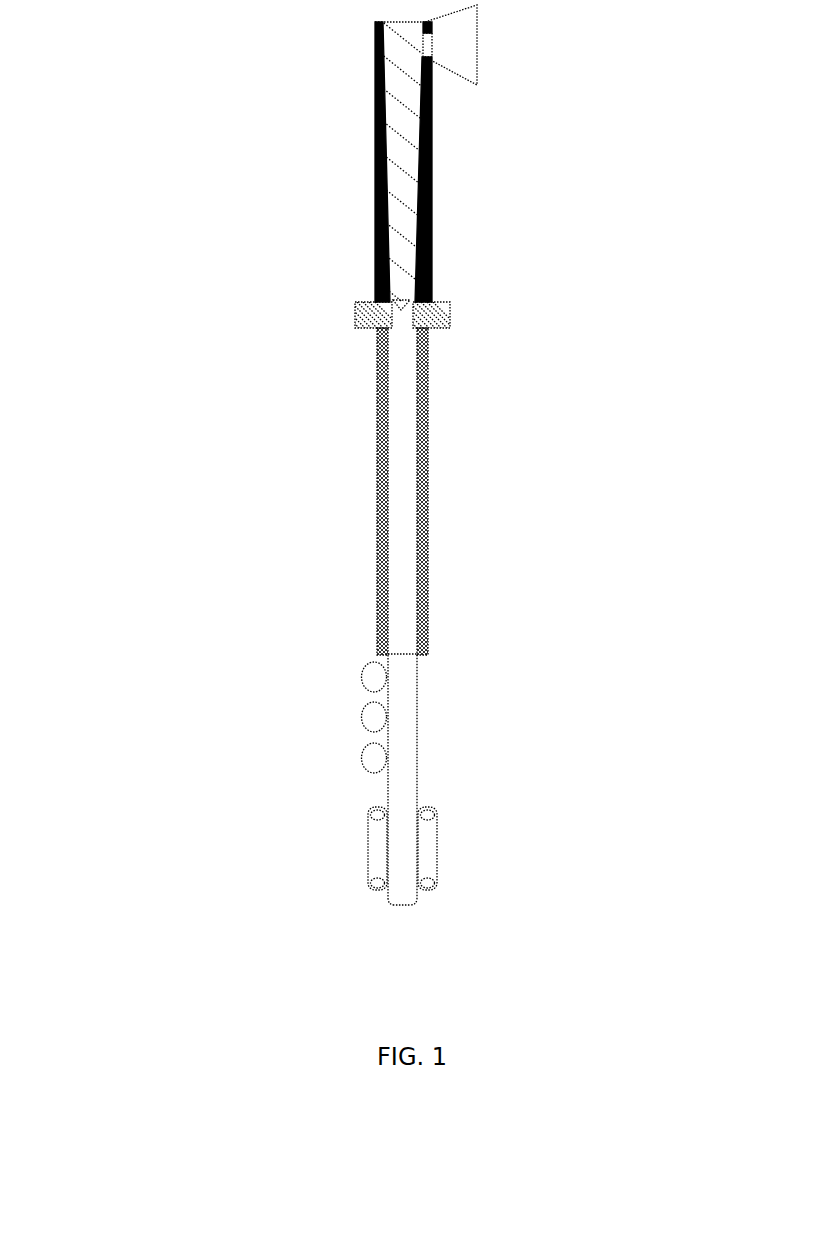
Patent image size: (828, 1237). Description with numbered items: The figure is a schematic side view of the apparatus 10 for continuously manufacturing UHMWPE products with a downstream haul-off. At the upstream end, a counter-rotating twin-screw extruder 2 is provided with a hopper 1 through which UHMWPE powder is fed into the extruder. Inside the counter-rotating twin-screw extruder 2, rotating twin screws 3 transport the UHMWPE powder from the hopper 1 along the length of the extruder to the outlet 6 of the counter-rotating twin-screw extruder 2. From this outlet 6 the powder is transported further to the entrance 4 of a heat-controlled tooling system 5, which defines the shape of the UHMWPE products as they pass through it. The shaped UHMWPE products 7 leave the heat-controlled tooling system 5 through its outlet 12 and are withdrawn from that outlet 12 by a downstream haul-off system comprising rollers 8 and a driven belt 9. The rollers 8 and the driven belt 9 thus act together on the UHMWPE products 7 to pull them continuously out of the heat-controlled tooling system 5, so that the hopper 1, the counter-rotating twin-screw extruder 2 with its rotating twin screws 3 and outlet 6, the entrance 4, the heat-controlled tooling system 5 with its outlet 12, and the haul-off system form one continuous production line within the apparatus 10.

The hopper 1 is at (485, 43).
The counter-rotating twin-screw extruder 2 is at (342, 162).
The rotating twin screws 3 is at (352, 172).
The entrance 4 is at (424, 301).
The heat-controlled tooling system 5 is at (366, 491).
The outlet 6 is at (340, 327).
The UHMWPE products 7 is at (325, 780).
The rollers 8 is at (253, 717).
The driven belt 9 is at (439, 848).
The apparatus 10 is at (519, 162).
The outlet 12 is at (488, 674).